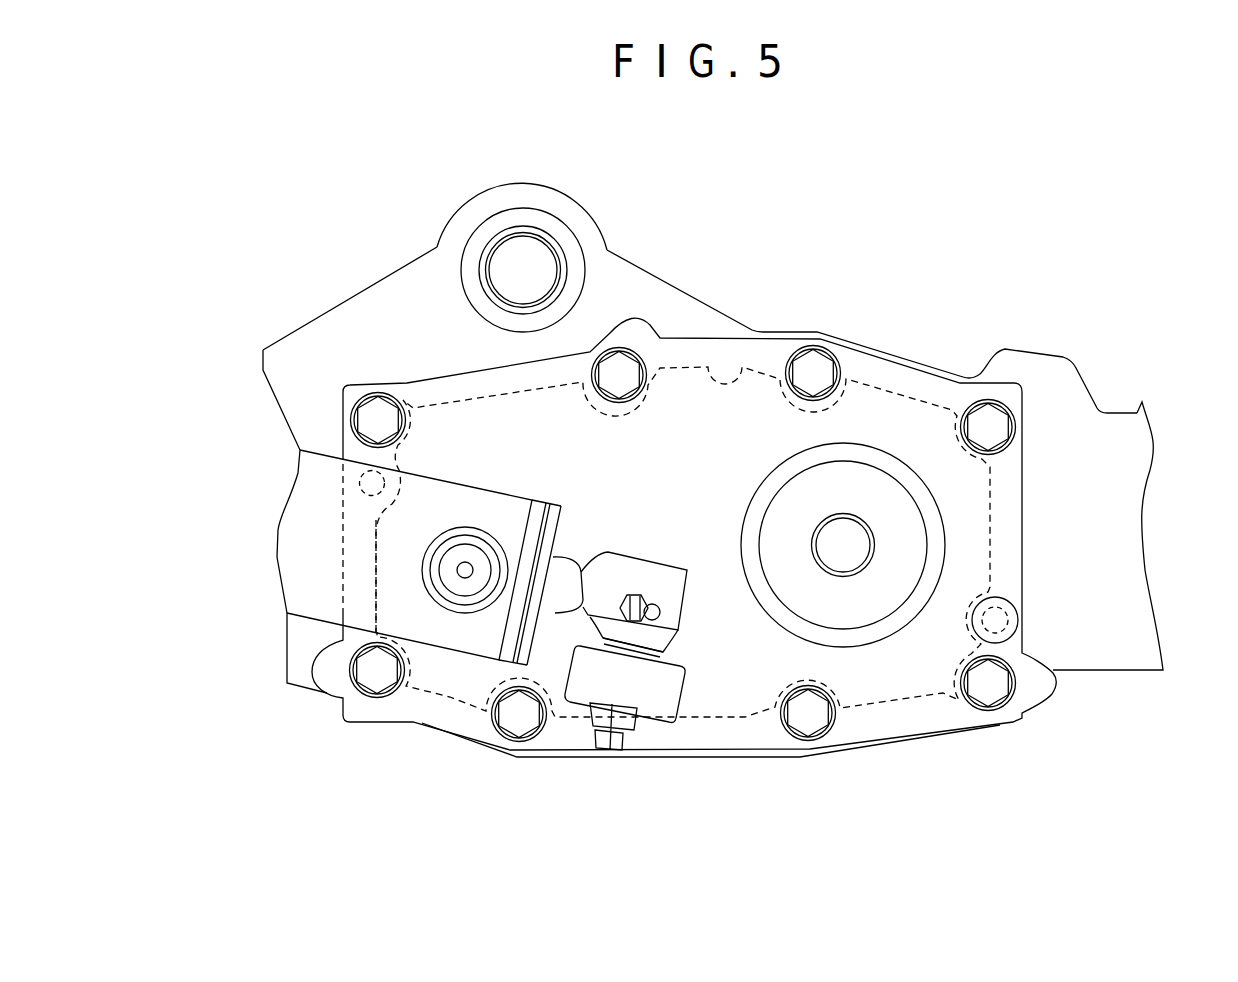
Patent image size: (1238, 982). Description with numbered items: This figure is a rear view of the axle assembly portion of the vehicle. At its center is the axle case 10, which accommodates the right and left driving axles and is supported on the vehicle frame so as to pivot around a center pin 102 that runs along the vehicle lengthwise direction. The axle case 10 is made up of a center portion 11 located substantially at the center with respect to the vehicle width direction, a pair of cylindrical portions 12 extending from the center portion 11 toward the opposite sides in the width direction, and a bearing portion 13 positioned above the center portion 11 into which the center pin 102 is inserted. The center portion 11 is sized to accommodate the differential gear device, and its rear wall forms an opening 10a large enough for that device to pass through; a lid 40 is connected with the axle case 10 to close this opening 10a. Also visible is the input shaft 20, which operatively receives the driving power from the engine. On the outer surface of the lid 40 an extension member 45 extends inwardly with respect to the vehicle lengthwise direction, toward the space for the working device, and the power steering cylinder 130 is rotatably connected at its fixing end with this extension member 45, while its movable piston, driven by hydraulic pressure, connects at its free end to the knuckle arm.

The axle case 10 is at (1087, 332).
The opening 10a is at (742, 367).
The center portion 11 is at (350, 322).
The cylindrical portion 12 is at (1113, 443).
The bearing portion 13 is at (494, 232).
The center pin 102 is at (523, 270).
The power steering cylinder 130 is at (308, 578).
The input shaft 20 is at (847, 552).
The lid 40 is at (925, 717).
The extension member 45 is at (670, 693).